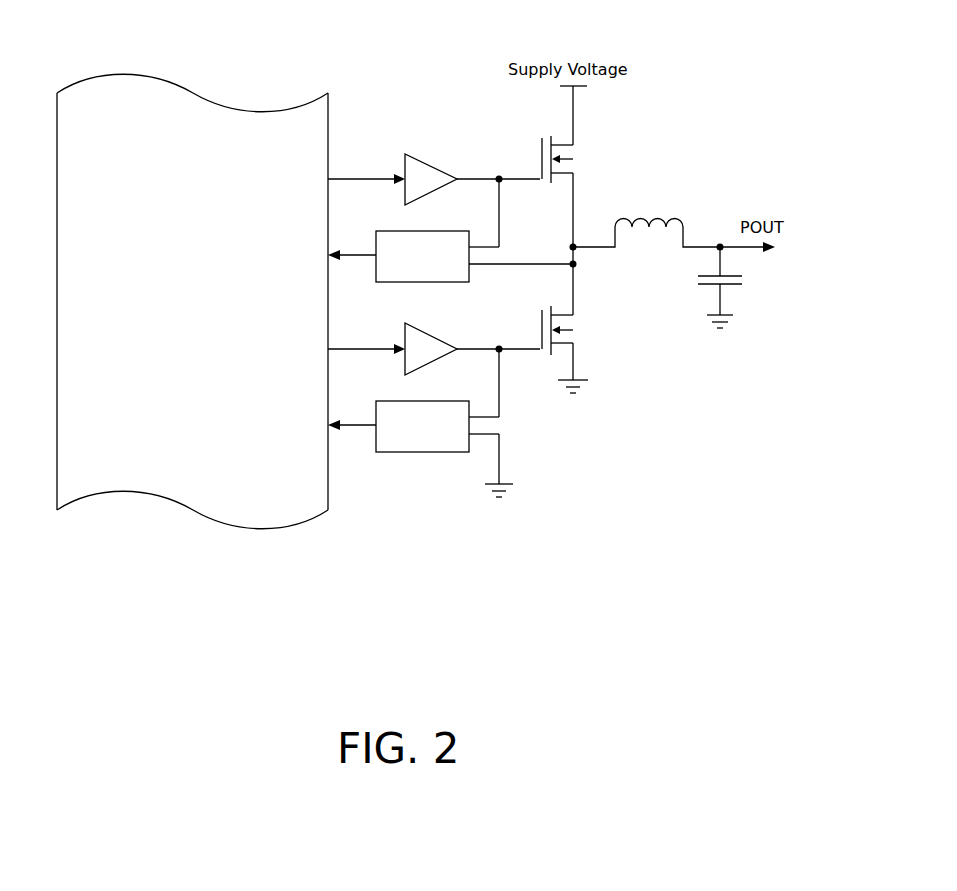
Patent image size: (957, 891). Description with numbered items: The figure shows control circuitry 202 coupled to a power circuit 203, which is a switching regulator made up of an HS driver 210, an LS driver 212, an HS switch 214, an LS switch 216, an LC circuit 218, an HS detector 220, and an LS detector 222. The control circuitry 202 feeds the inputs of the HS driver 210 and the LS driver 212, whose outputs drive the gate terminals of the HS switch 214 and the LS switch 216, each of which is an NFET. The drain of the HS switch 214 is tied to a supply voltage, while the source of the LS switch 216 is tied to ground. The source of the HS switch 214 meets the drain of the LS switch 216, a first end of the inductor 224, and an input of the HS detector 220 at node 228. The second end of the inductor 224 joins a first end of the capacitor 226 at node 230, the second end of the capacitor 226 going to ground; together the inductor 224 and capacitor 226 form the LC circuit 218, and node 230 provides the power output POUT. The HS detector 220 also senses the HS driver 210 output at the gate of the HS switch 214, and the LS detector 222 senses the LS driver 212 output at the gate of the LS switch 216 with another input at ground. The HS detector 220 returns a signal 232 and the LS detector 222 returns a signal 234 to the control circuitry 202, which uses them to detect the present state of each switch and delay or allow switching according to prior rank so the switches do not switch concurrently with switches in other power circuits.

The control circuitry 202 is at (176, 354).
The power circuit 203 is at (722, 64).
The HS driver 210 is at (421, 162).
The LS driver 212 is at (430, 334).
The HS switch 214 is at (562, 182).
The LS switch 216 is at (562, 350).
The LC circuit 218 is at (665, 316).
The HS detector 220 is at (403, 230).
The LS detector 222 is at (403, 400).
The inductor 224 is at (652, 220).
The capacitor 226 is at (735, 287).
The node 228 is at (577, 267).
The node 230 is at (716, 243).
The signal 232 is at (357, 259).
The signal 234 is at (357, 429).